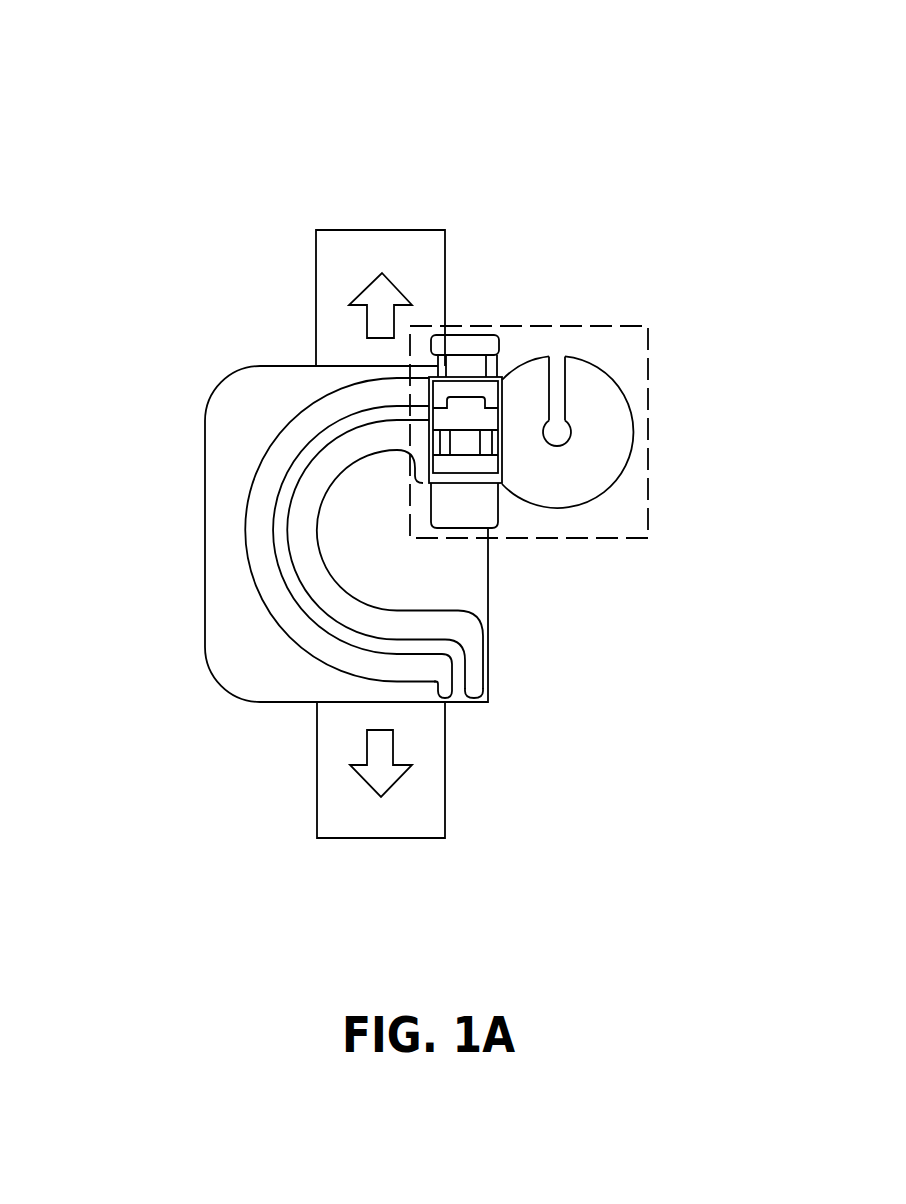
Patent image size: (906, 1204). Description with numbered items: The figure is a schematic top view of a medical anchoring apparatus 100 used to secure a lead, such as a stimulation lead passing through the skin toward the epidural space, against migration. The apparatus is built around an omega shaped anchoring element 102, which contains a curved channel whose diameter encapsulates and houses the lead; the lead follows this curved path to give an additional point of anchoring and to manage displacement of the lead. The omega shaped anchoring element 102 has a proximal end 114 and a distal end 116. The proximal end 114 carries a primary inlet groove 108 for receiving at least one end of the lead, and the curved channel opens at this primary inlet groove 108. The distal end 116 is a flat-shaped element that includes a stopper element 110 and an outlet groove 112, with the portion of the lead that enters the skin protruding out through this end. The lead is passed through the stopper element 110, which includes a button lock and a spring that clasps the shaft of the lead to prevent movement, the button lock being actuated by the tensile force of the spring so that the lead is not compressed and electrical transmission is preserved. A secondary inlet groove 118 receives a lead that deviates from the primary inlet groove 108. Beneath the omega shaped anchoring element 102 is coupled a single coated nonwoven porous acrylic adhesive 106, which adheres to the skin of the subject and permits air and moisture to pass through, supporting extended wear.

The medical anchoring apparatus 100 is at (431, 118).
The omega shaped anchoring element 102 is at (256, 477).
The single coated nonwoven porous acrylic adhesive 106 is at (205, 532).
The primary inlet groove 108 is at (455, 696).
The stopper element 110 is at (470, 335).
The outlet groove 112 is at (559, 357).
The proximal end 114 is at (498, 699).
The distal end 116 is at (660, 477).
The secondary inlet groove 118 is at (562, 432).